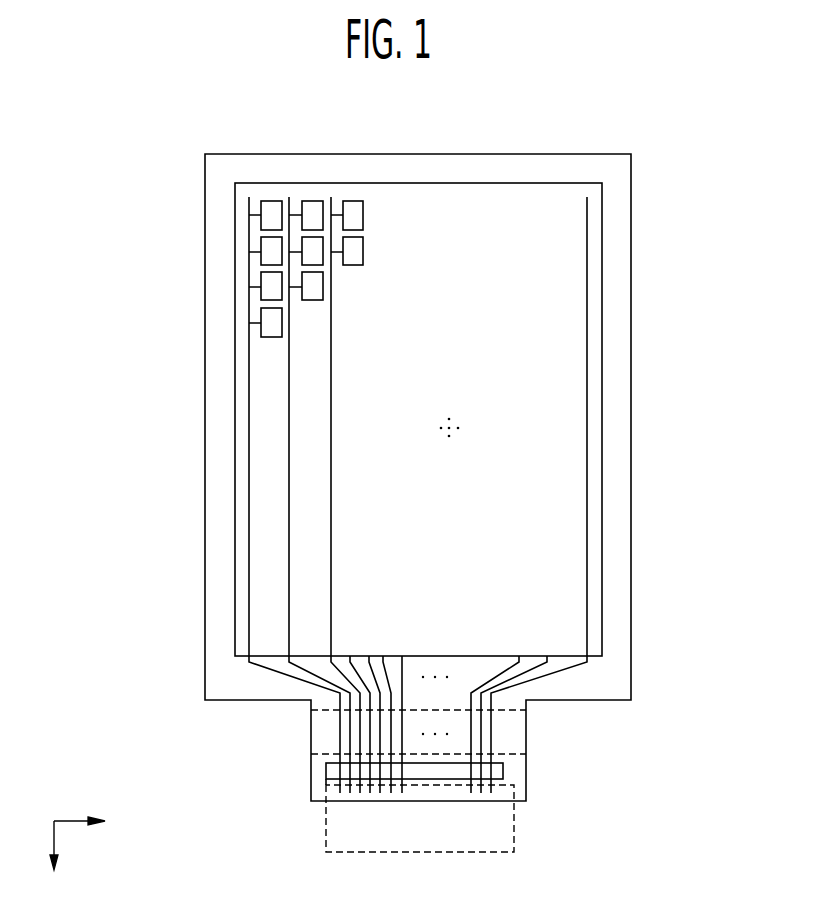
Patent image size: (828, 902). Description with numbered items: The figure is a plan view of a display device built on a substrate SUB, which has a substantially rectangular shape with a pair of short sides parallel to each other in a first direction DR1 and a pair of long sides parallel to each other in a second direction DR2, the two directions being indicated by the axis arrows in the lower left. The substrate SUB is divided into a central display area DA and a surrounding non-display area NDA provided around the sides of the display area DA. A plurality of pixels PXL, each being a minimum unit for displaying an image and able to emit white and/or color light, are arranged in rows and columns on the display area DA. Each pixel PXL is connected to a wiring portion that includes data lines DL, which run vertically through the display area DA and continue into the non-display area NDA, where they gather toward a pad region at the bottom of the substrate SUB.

The substrate SUB is at (618, 574).
The display area DA is at (568, 445).
The non-display area NDA is at (618, 490).
The data line DL is at (249, 437).
The pixel PXL is at (310, 200).
The first direction DR1 is at (96, 823).
The second direction DR2 is at (51, 860).